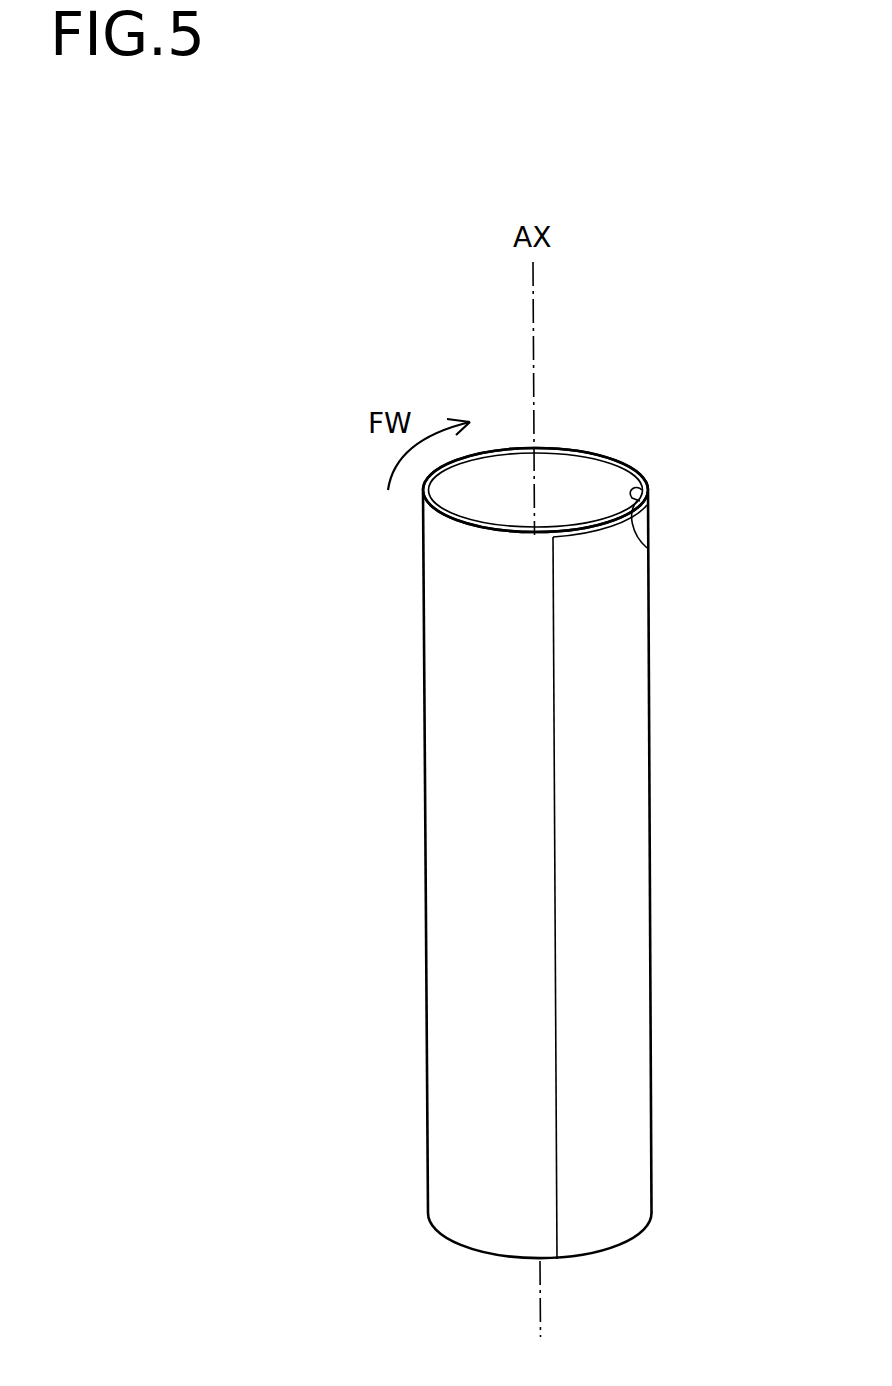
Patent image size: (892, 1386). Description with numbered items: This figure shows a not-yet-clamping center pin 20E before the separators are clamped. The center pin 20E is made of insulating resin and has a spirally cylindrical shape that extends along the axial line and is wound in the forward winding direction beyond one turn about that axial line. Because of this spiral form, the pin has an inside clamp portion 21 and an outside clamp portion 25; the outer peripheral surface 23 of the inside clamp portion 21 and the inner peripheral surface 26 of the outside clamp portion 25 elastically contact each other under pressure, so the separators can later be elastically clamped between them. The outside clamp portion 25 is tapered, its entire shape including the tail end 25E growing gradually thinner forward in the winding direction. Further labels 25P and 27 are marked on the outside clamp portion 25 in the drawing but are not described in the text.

The center pin 20E is at (647, 427).
The inside clamp portion 21 is at (583, 522).
The outer peripheral surface 23 is at (630, 497).
The outside clamp portion 25 is at (647, 548).
The strip portion 25P is at (570, 557).
The tail end 25E is at (555, 557).
The inner peripheral surface 26 is at (637, 497).
The overlap portion 27 is at (595, 548).